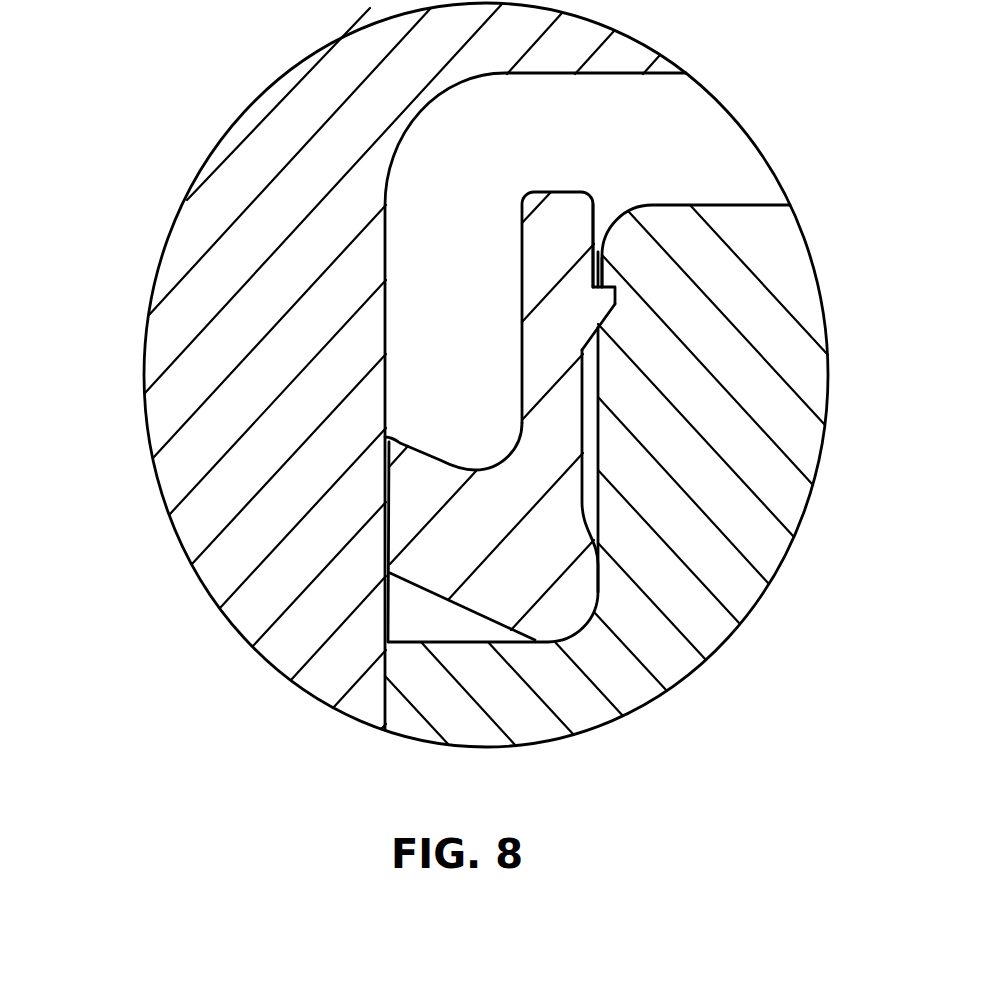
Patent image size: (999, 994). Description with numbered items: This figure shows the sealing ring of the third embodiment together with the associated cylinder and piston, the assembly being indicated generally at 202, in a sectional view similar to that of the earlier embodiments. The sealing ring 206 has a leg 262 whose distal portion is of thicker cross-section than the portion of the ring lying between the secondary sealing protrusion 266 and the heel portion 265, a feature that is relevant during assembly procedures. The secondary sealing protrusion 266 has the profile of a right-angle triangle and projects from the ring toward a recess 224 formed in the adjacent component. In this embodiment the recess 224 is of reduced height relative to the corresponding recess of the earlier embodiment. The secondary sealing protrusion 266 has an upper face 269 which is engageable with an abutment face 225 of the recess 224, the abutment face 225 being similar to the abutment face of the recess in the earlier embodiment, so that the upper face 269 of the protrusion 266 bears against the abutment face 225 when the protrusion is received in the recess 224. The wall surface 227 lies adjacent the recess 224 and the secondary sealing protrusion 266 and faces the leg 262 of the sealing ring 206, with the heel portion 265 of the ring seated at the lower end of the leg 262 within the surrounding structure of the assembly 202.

The seal assembly 202 is at (814, 574).
The sealing ring 206 is at (497, 404).
The leg 262 is at (568, 226).
The heel portion 265 is at (571, 606).
The secondary sealing protrusion 266 is at (592, 301).
The upper face 269 is at (598, 252).
The recess 224 is at (614, 317).
The abutment face 225 is at (610, 283).
The wall surface 227 is at (604, 330).